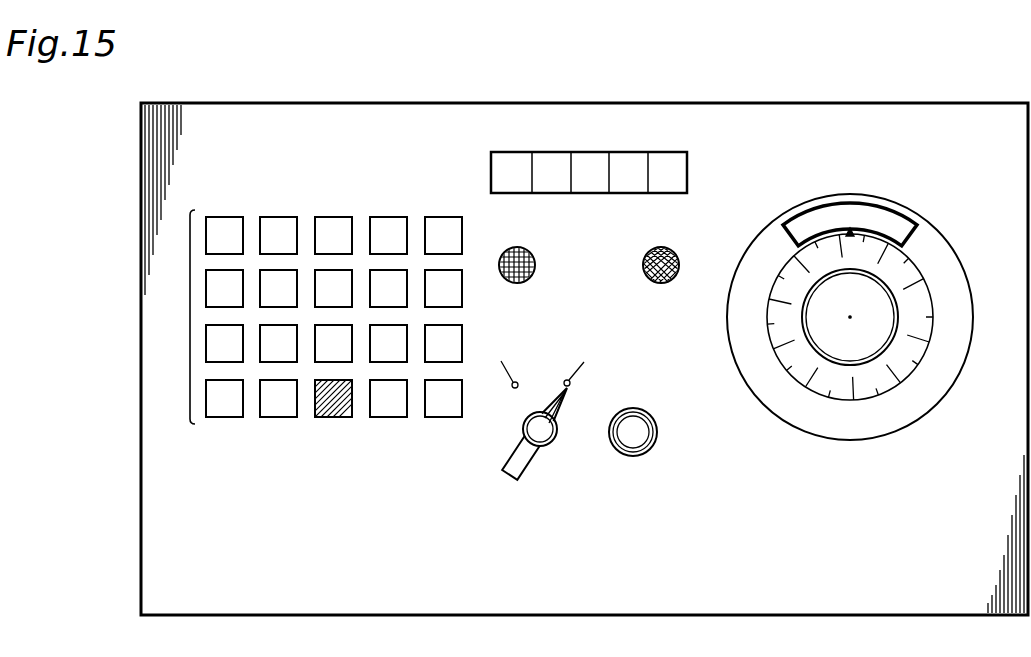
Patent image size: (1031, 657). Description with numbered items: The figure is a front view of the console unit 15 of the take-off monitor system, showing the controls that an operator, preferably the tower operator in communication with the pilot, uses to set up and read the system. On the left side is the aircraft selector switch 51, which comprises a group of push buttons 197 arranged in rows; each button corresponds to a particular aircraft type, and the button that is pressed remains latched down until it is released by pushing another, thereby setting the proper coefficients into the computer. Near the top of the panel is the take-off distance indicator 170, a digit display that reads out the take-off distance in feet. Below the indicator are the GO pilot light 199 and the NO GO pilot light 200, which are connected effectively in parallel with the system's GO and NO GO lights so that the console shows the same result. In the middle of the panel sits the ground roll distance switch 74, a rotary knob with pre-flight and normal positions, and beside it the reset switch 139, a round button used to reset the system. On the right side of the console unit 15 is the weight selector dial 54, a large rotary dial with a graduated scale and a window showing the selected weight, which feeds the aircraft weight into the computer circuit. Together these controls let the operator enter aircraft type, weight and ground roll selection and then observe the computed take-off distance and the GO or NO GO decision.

The console unit 15 is at (392, 110).
The take-off distance indicator 170 is at (491, 182).
The push buttons 197 is at (190, 311).
The aircraft selector switch 51 is at (304, 365).
The GO pilot light 199 is at (529, 278).
The NO GO pilot light 200 is at (648, 276).
The ground roll distance switch 74 is at (519, 461).
The reset switch 139 is at (641, 441).
The weight selector dial 54 is at (850, 353).